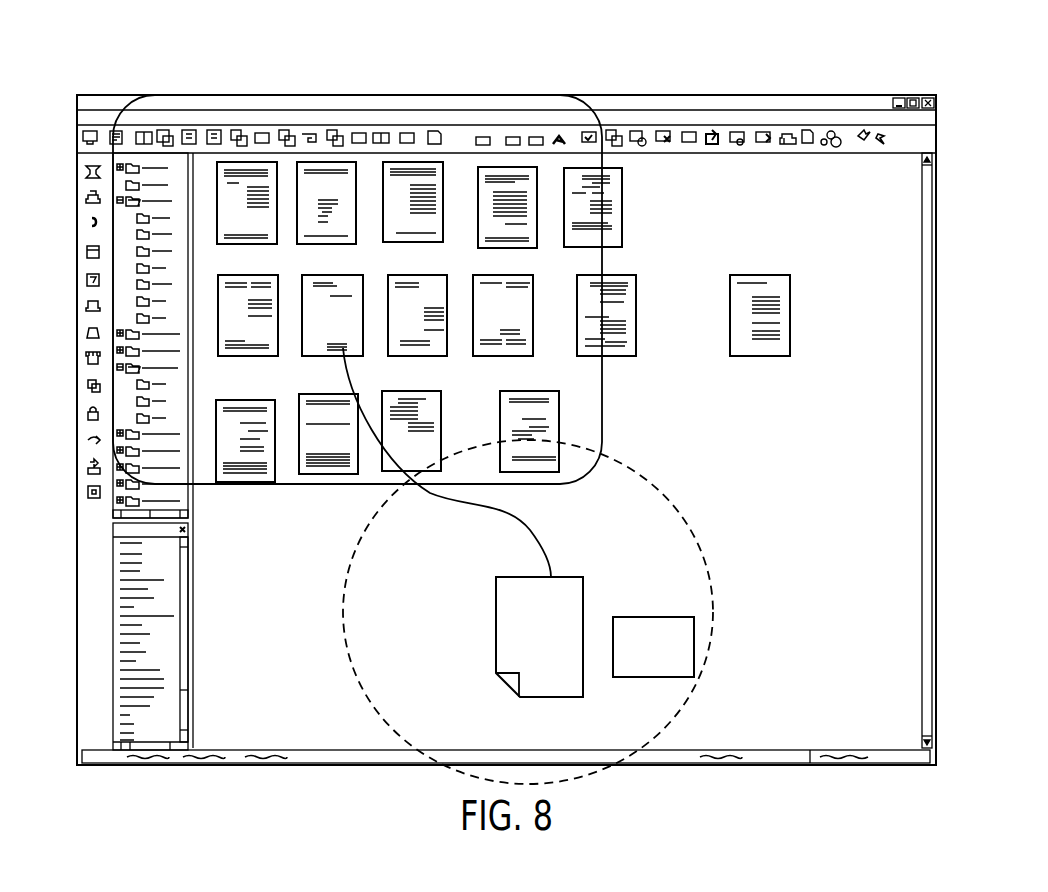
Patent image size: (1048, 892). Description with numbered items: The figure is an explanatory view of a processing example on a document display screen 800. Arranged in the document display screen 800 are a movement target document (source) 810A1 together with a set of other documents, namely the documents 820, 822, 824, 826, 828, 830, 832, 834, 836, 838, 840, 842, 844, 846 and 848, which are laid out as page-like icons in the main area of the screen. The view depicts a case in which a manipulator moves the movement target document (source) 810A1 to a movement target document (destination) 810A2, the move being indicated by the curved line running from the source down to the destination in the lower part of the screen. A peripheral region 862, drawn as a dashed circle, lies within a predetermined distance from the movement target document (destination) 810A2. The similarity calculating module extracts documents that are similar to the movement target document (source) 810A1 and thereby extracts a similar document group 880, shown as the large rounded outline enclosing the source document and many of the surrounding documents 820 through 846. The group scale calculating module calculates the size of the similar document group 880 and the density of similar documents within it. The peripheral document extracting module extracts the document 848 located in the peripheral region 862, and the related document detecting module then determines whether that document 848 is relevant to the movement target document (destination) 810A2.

The document display screen 800 is at (1000, 68).
The similar document group 880 is at (577, 96).
The document 820 is at (258, 244).
The document 822 is at (336, 244).
The document 824 is at (421, 242).
The document 826 is at (515, 248).
The document 828 is at (600, 247).
The document 830 is at (256, 356).
The movement target document (source) 810A1 is at (334, 356).
The document 832 is at (420, 356).
The document 834 is at (510, 356).
The document 836 is at (615, 356).
The document 838 is at (770, 356).
The document 840 is at (254, 482).
The document 842 is at (330, 474).
The document 844 is at (441, 437).
The document 846 is at (559, 430).
The peripheral region 862 is at (680, 518).
The movement target document (destination) 810A2 is at (496, 633).
The document 848 is at (637, 617).